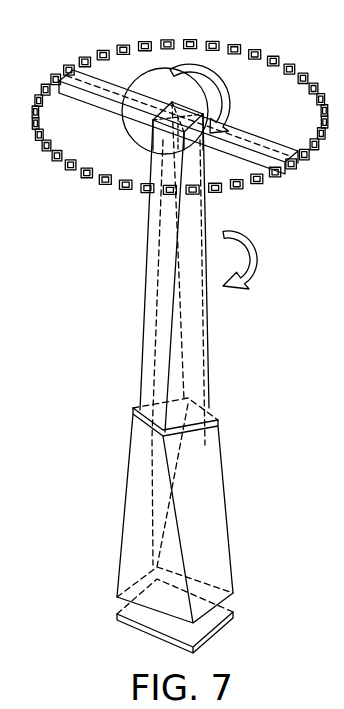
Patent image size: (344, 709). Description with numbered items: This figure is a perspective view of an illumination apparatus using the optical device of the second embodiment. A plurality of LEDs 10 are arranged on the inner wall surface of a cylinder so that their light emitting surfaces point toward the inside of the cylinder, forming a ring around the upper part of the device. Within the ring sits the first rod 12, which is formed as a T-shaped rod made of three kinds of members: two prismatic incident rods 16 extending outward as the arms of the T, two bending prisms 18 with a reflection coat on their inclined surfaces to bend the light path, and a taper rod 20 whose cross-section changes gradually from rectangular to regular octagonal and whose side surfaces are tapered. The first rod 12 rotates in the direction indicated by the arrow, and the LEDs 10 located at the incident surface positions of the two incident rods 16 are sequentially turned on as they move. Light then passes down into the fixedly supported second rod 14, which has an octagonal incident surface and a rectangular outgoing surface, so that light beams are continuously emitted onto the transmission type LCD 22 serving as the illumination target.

The LEDs 10 is at (308, 164).
The first rod 12 is at (148, 263).
The second rod 14 is at (132, 458).
The incident rods 16 is at (250, 133).
The bending prisms 18 is at (194, 98).
The taper rod 20 is at (200, 332).
The transmission type LCD 22 is at (203, 628).